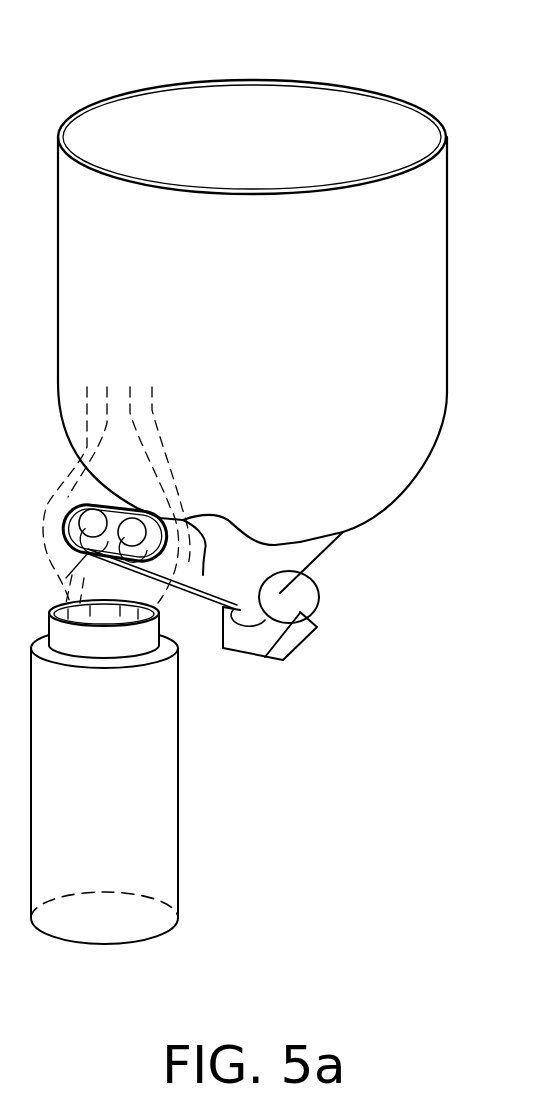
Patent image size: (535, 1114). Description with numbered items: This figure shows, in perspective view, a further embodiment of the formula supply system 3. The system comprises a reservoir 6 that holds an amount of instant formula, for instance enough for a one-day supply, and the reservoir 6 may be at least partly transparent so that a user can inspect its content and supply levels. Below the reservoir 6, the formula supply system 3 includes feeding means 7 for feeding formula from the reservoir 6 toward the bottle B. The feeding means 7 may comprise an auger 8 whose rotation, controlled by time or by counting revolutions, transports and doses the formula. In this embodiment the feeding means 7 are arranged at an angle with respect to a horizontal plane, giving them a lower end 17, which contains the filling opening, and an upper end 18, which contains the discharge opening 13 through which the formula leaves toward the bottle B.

The formula supply system 3 is at (86, 86).
The reservoir 6 is at (363, 88).
The feeding means 7 is at (188, 575).
The auger 8 is at (88, 522).
The upper end 18 is at (67, 538).
The discharge opening 13 is at (100, 560).
The lower end 17 is at (292, 640).
The bottle B is at (162, 779).